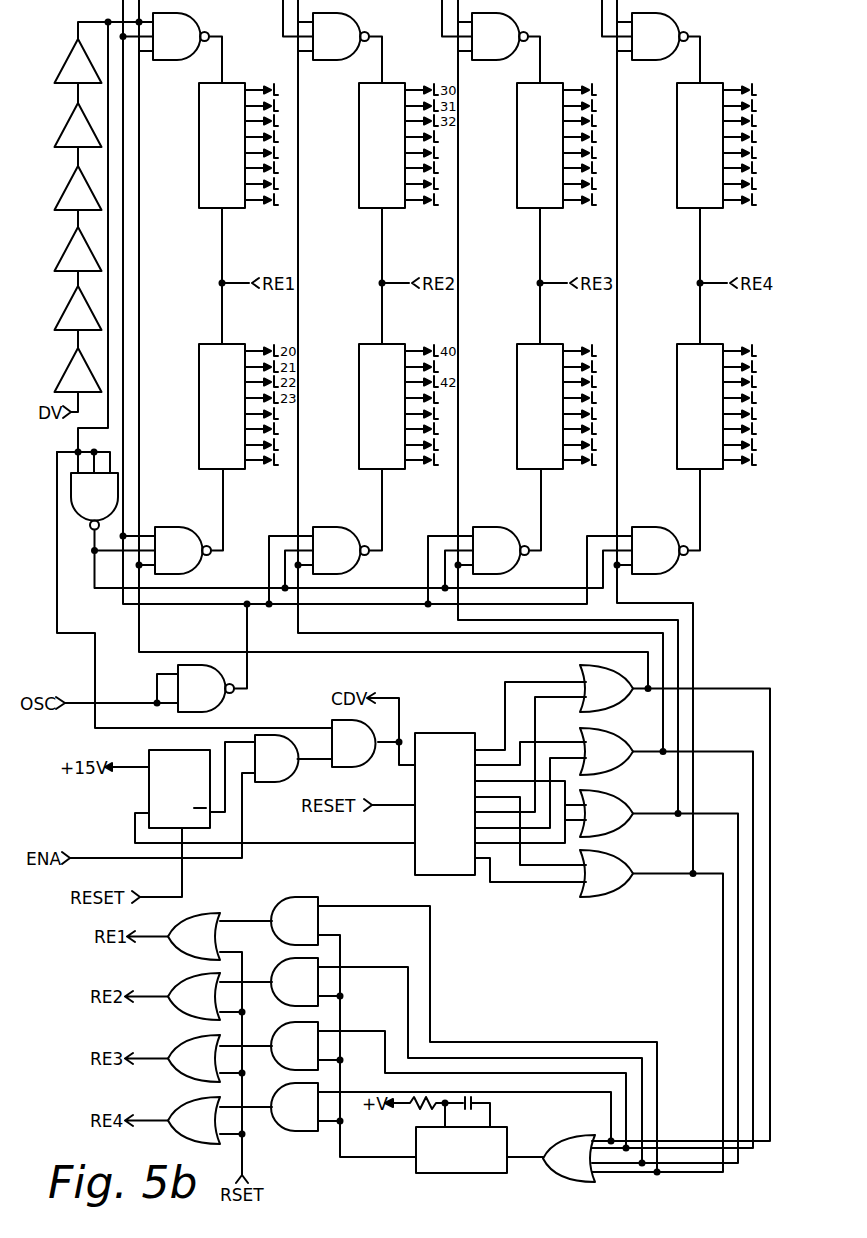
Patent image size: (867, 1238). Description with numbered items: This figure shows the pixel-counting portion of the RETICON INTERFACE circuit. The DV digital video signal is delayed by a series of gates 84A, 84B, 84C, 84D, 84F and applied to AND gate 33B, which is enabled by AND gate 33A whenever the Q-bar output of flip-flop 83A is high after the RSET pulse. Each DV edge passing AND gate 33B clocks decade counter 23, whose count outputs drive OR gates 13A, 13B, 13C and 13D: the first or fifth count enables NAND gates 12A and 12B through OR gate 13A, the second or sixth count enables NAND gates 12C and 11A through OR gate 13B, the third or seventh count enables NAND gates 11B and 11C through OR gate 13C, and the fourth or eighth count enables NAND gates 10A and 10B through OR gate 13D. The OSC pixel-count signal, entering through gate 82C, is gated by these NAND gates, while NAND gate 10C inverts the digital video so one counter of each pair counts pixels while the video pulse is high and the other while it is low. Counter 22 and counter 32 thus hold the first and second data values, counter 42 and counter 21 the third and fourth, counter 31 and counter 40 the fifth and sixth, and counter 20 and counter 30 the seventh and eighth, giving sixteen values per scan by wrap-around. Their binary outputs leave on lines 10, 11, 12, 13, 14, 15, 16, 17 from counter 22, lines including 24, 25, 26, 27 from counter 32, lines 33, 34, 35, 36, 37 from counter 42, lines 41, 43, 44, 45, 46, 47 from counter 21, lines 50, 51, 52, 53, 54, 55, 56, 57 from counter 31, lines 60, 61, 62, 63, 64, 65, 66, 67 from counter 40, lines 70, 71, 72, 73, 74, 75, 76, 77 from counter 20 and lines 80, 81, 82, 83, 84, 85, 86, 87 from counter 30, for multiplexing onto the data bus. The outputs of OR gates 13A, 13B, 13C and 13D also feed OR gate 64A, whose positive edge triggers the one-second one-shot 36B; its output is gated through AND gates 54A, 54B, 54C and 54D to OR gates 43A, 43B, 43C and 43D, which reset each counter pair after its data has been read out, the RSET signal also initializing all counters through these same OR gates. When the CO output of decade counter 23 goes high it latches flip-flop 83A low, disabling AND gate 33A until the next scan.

The buffer amplifier 84A is at (78, 370).
The buffer amplifier 84B is at (78, 308).
The buffer amplifier 84C is at (78, 249).
The buffer amplifier 84D is at (78, 188).
The buffer amplifier 84F is at (78, 93).
The NAND gate 12A is at (181, 36).
The NAND gate 12B is at (183, 550).
The NAND gate 12C is at (341, 36).
The NAND gate 11A is at (341, 550).
The NAND gate 11B is at (500, 36).
The NAND gate 11C is at (501, 550).
The NAND gate 10A is at (660, 36).
The NAND gate 10B is at (660, 550).
The NAND gate 10C is at (94, 501).
The counter 22 is at (222, 146).
The counter 42 is at (382, 146).
The counter 31 is at (540, 146).
The counter 20 is at (700, 146).
The counter 32 is at (222, 407).
The counter 21 is at (382, 407).
The counter 40 is at (540, 407).
The counter 30 is at (700, 407).
The inverter gate 82C is at (206, 688).
The AND gate 33A is at (276, 758).
The AND gate 33B is at (353, 743).
The flip-flop 83A is at (179, 791).
The decade counter 23 is at (445, 804).
The OR gate 13A is at (606, 688).
The OR gate 13B is at (606, 751).
The OR gate 13C is at (606, 813).
The OR gate 13D is at (606, 873).
The OR gate 43A is at (194, 936).
The OR gate 43B is at (194, 996).
The OR gate 43C is at (194, 1058).
The OR gate 43D is at (194, 1120).
The AND gate 54A is at (294, 921).
The AND gate 54B is at (294, 982).
The AND gate 54C is at (294, 1046).
The AND gate 54D is at (294, 1107).
The one-second one-shot 36B is at (461, 1150).
The OR gate 64A is at (569, 1158).
The output line 10 is at (271, 90).
The output line 11 is at (271, 106).
The output line 12 is at (271, 121).
The output line 13 is at (271, 137).
The output line 14 is at (271, 153).
The output line 15 is at (271, 168).
The output line 16 is at (271, 184).
The output line 17 is at (271, 200).
The photodiode array 24 is at (271, 414).
The output line 25 is at (271, 429).
The output line 26 is at (271, 445).
The output line 27 is at (271, 460).
The RETICON INTERFACE circuit 33 is at (431, 137).
The output line 34 is at (431, 153).
The output line 35 is at (431, 168).
The output line 36 is at (431, 184).
The output line 37 is at (431, 200).
The multiplexer 41 is at (431, 367).
The output line 43 is at (431, 398).
The output line 44 is at (431, 414).
The output line 45 is at (431, 429).
The output line 46 is at (431, 445).
The output line 47 is at (431, 460).
The multiplexer 50 is at (589, 90).
The multiplexer 51 is at (589, 106).
The multiplexer 52 is at (589, 121).
The output line 53 is at (589, 137).
The output line 54 is at (589, 153).
The output line 55 is at (589, 168).
The output line 56 is at (589, 184).
The output line 57 is at (589, 200).
The multiplexer 60 is at (589, 351).
The multiplexer 61 is at (589, 367).
The multiplexer 62 is at (589, 382).
The output line 63 is at (589, 398).
The output line 64 is at (589, 414).
The output line 65 is at (589, 429).
The counter 66 is at (589, 445).
The output line 67 is at (589, 460).
The multiplexer 70 is at (749, 90).
The multiplexer 71 is at (749, 106).
The multiplexer 72 is at (749, 121).
The dual binary counter 73 is at (749, 137).
The digital comparator 74 is at (749, 153).
The output line 75 is at (749, 168).
The output line 76 is at (749, 184).
The output line 77 is at (749, 200).
The output line 80 is at (749, 351).
The output line 81 is at (749, 367).
The output line 82 is at (749, 382).
The output line 83 is at (749, 398).
The output line 84 is at (749, 414).
The output line 85 is at (749, 429).
The output line 86 is at (749, 445).
The output line 87 is at (749, 460).